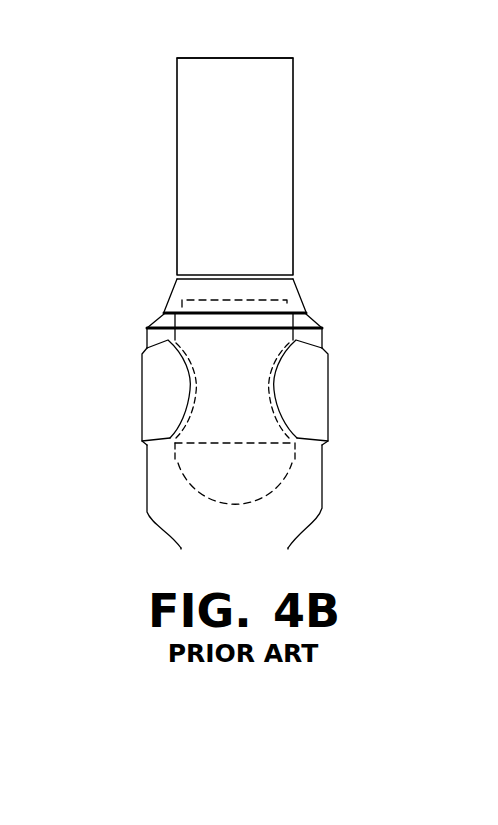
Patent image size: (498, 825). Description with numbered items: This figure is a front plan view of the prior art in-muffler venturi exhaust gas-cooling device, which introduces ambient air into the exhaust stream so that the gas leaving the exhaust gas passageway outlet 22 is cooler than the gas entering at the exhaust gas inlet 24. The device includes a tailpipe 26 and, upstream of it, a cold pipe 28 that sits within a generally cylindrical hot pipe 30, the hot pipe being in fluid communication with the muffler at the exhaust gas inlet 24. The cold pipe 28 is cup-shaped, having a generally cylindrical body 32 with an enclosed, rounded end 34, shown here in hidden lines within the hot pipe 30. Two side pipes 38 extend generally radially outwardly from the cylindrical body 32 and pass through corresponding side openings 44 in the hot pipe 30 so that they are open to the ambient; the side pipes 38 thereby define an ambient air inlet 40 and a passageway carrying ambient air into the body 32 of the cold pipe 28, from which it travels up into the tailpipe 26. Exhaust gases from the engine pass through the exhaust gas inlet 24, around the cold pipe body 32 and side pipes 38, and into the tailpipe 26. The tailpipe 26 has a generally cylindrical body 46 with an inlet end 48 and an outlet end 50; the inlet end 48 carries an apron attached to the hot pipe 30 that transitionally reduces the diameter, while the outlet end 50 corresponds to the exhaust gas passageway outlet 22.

The exhaust gas passageway outlet 22 is at (203, 57).
The exhaust gas inlet 24 is at (241, 540).
The tailpipe 26 is at (248, 127).
The cold pipe 28 is at (240, 430).
The hot pipe 30 is at (147, 511).
The cylindrical body 32 is at (218, 413).
The rounded end 34 is at (233, 505).
The side pipes 38 is at (163, 362).
The ambient air inlet 40 is at (142, 387).
The side openings 44 is at (142, 442).
The cylindrical body 46 is at (248, 200).
The inlet end 48 is at (308, 333).
The outlet end 50 is at (273, 56).